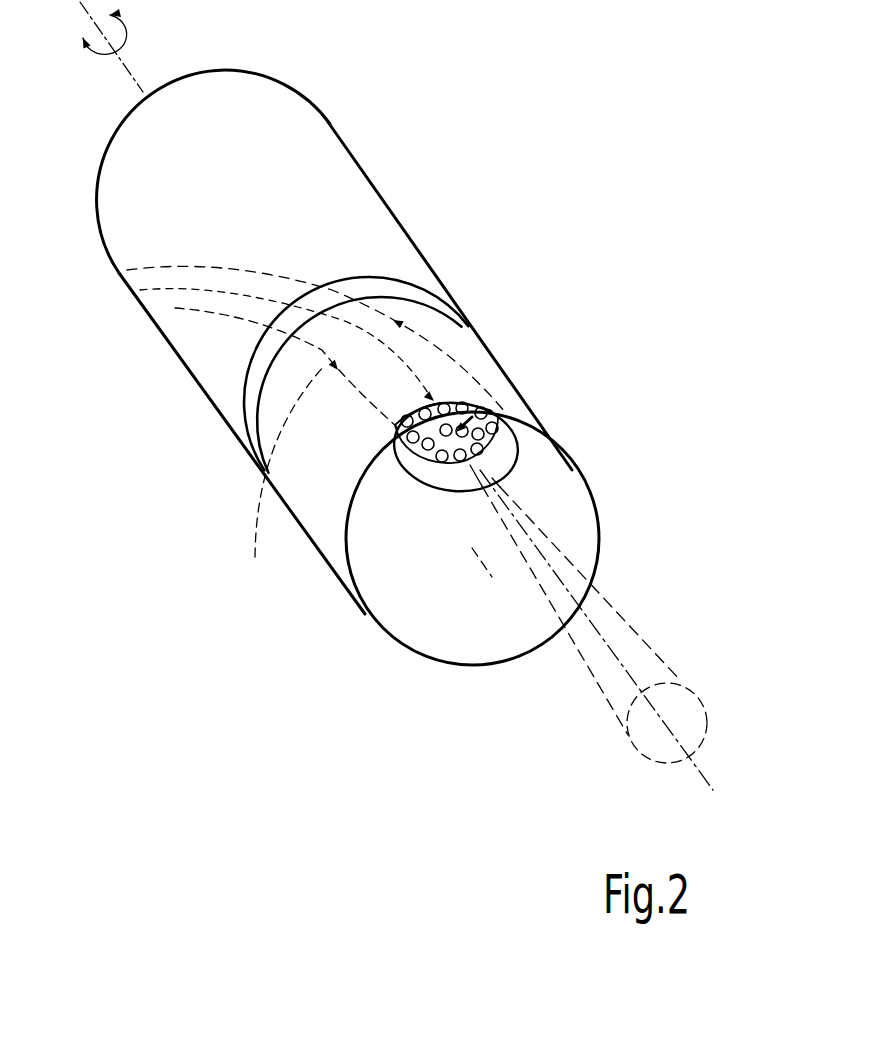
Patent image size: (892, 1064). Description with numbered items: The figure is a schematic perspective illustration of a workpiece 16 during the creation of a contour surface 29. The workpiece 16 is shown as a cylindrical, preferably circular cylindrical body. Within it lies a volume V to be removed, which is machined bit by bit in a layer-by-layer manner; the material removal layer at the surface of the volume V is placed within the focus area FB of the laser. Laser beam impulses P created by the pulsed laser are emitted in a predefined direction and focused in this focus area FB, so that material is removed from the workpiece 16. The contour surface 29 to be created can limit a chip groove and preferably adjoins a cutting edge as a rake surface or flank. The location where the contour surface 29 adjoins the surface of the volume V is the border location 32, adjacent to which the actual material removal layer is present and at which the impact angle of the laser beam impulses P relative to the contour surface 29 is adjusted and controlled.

The workpiece 16 is at (347, 183).
The contour surface 29 is at (452, 476).
The border location 32 is at (497, 412).
The focus area FB is at (472, 417).
The volume to be removed V is at (287, 474).
The laser beam impulses P is at (650, 647).